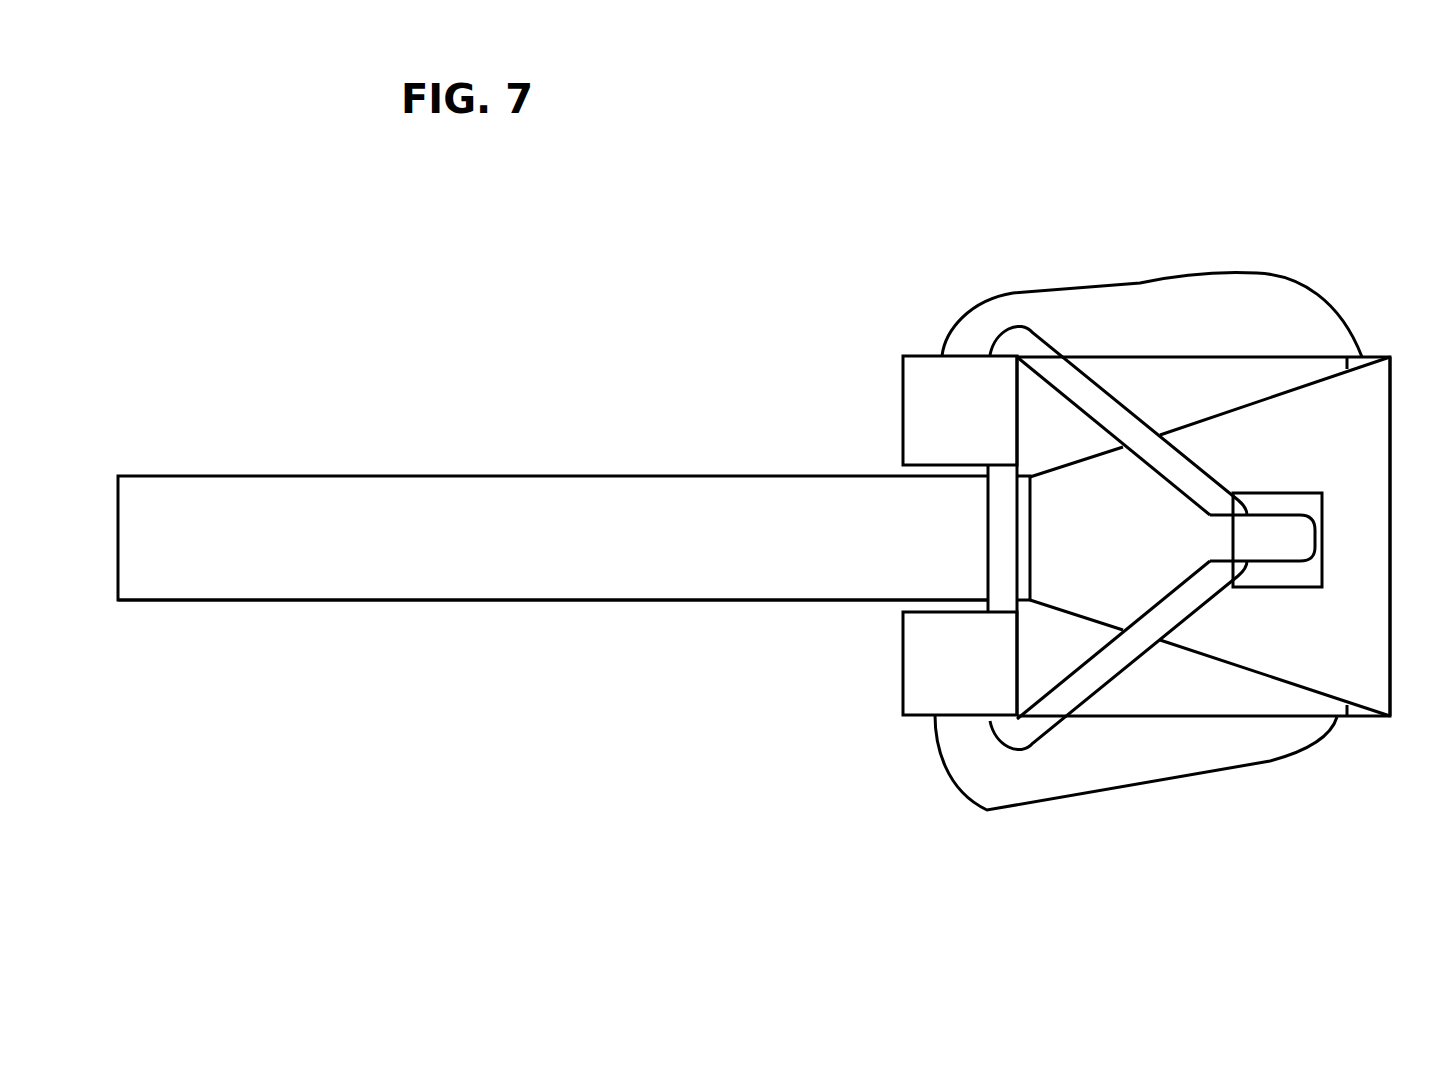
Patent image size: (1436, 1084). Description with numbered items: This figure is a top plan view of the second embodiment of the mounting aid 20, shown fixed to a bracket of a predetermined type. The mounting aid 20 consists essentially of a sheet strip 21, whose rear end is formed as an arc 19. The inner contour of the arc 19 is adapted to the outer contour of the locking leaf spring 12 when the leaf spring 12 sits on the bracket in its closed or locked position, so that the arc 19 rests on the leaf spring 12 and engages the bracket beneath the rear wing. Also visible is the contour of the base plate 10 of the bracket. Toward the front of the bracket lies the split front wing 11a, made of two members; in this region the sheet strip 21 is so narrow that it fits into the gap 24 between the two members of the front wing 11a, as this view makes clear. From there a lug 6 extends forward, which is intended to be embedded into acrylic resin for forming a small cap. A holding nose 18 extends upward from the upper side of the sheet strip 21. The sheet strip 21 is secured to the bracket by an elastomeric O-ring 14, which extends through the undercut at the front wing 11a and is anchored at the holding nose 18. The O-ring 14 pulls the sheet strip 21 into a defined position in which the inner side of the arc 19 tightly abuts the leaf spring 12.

The lug 6 is at (300, 520).
The base plate 10 is at (1147, 765).
The front wing 11a is at (928, 395).
The locking leaf spring 12 is at (1210, 697).
The elastomeric O-ring 14 is at (1070, 687).
The holding nose 18 is at (1270, 548).
The arc 19 is at (1382, 678).
The mounting aid 20 is at (836, 362).
The sheet strip 21 is at (585, 573).
The gap 24 is at (902, 604).